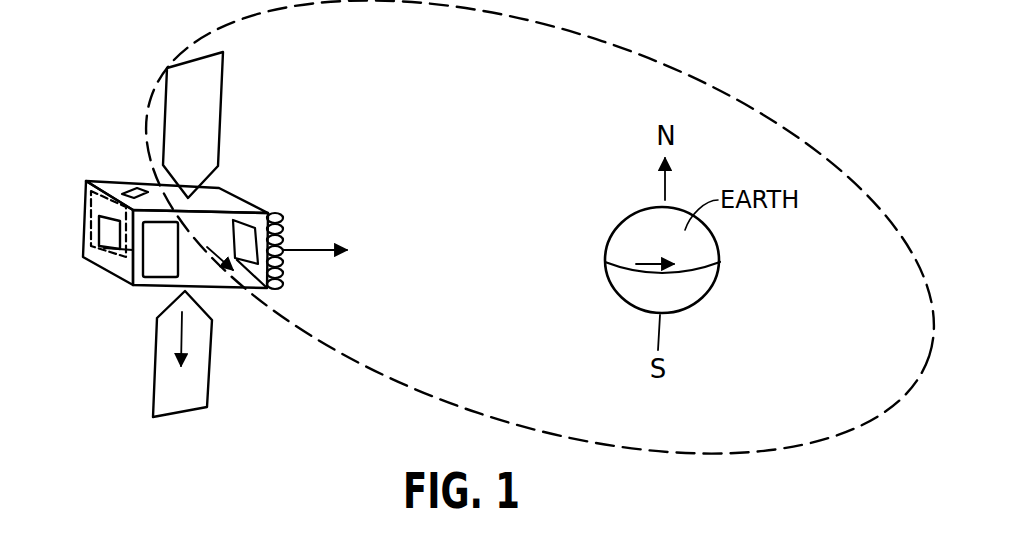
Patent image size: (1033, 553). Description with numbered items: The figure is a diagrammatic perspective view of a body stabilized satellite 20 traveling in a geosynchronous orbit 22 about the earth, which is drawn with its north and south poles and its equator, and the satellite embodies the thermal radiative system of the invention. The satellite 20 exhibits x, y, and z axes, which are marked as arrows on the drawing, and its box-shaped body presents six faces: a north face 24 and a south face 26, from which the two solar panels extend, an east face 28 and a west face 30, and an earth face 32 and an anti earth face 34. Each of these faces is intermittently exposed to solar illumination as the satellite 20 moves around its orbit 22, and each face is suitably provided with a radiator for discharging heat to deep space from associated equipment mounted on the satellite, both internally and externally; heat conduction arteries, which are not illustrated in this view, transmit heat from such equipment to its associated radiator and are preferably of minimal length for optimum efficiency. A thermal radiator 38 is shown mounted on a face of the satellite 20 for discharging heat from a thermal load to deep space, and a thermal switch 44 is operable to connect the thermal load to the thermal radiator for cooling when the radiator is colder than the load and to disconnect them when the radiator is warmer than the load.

The body stabilized satellite 20 is at (195, 234).
The geosynchronous orbit 22 is at (700, 89).
The north face 24 is at (230, 194).
The south face 26 is at (165, 293).
The east face 28 is at (307, 238).
The west face 30 is at (88, 243).
The earth face 32 is at (285, 236).
The anti earth face 34 is at (90, 252).
The thermal radiator 38 is at (122, 182).
The thermal switch 44 is at (280, 212).